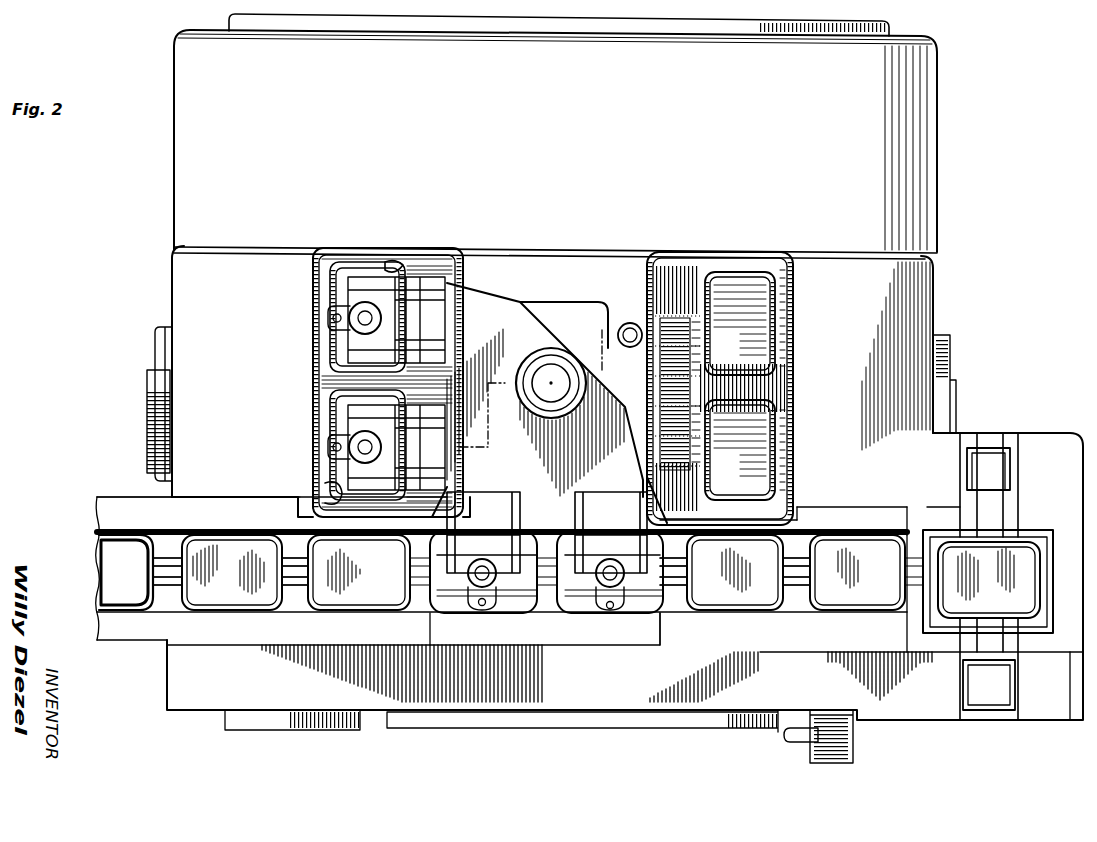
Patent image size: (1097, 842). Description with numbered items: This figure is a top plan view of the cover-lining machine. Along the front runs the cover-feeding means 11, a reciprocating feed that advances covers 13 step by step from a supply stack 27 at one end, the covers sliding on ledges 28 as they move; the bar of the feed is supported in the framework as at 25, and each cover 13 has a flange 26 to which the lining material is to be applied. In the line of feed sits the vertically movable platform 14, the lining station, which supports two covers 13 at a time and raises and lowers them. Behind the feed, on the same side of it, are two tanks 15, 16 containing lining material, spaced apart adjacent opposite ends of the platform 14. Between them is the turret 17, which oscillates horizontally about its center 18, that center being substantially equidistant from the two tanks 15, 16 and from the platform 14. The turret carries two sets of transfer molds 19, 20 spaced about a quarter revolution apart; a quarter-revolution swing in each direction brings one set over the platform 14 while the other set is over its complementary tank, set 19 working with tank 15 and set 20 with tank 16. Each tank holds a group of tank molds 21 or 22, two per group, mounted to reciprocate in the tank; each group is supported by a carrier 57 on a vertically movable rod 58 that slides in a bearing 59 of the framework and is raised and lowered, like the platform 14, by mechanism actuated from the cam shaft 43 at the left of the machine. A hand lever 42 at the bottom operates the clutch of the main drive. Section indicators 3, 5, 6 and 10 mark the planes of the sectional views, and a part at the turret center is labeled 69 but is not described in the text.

The section line 3 is at (560, 749).
The section line 5 is at (666, 13).
The section line 6 is at (295, 447).
The section line 10 is at (80, 572).
The cover-feeding means 11 is at (169, 590).
The covers 13 is at (569, 576).
The vertically movable platform 14 is at (615, 639).
The tank 15 is at (314, 296).
The tank 16 is at (793, 418).
The turret 17 is at (545, 390).
The center 18 is at (514, 377).
The set of transfer molds 19 is at (343, 405).
The set of transfer molds 20 is at (565, 545).
The group of tank molds 21 is at (395, 265).
The group of tank molds 22 is at (765, 405).
The support 25 is at (170, 560).
The flange 26 is at (340, 608).
The stack 27 is at (1049, 522).
The ledges 28 is at (805, 512).
The hand lever 42 is at (795, 742).
The cam shaft 43 is at (157, 391).
The carrier 57 is at (435, 330).
The vertically movable rod 58 is at (631, 345).
The bearing 59 is at (626, 323).
The hub bore 69 is at (548, 373).